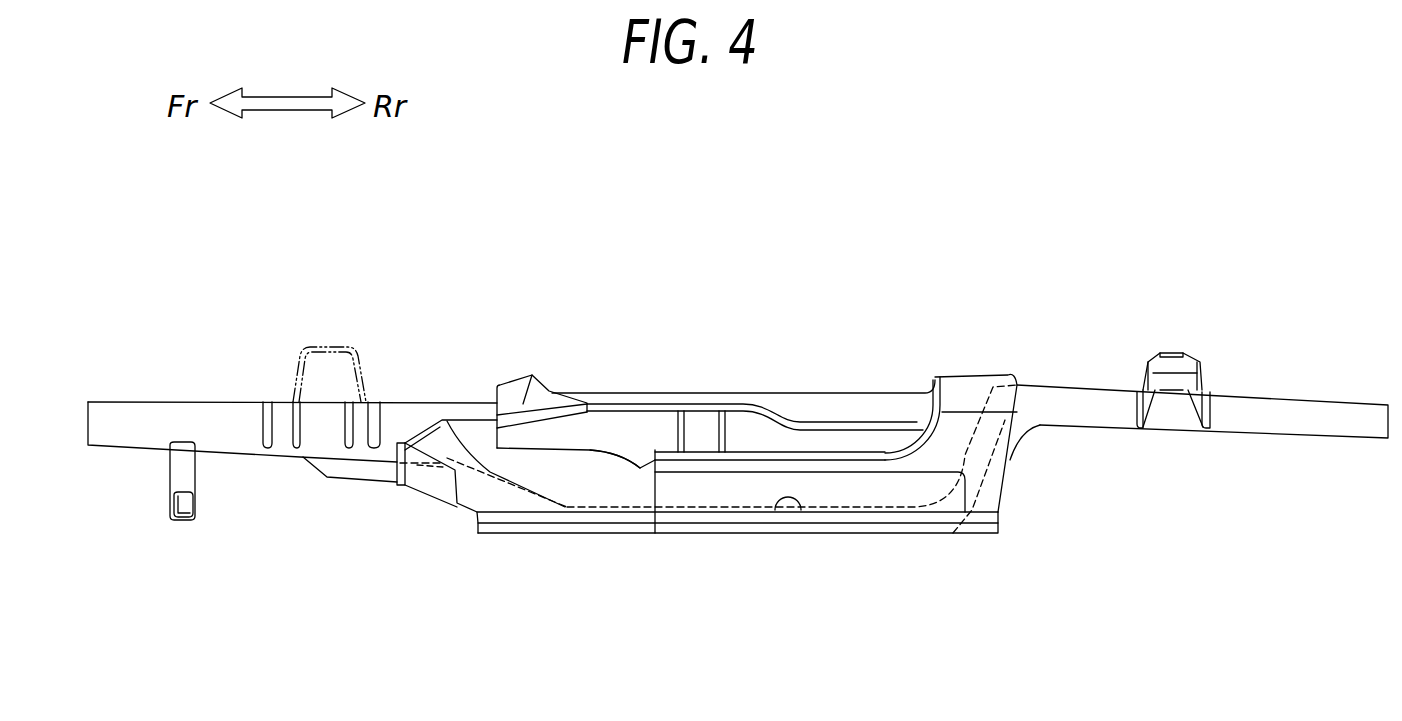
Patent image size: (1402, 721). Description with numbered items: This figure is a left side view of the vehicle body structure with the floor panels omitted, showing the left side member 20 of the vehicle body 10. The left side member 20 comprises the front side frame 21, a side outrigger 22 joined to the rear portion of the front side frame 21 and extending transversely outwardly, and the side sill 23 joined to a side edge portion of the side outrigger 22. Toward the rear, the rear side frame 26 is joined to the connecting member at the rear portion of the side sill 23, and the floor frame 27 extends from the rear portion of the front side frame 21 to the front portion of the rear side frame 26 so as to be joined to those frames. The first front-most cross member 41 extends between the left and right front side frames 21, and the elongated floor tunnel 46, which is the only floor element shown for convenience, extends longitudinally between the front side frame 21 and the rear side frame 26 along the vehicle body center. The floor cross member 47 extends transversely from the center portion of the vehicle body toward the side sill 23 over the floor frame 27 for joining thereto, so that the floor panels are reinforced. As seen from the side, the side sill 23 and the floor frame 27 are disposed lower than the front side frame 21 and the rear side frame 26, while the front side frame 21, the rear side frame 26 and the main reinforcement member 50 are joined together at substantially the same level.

The vehicle body 10 is at (218, 273).
The left side member 20 is at (148, 402).
The front side frame 21 is at (215, 418).
The side outrigger 22 is at (428, 473).
The side sill 23 is at (730, 492).
The rear side frame 26 is at (1270, 405).
The floor frame 27 is at (803, 518).
The first front-most cross member 41 is at (185, 520).
The floor tunnel 46 is at (588, 431).
The floor cross member 47 is at (750, 417).
The main reinforcement member 50 is at (619, 393).